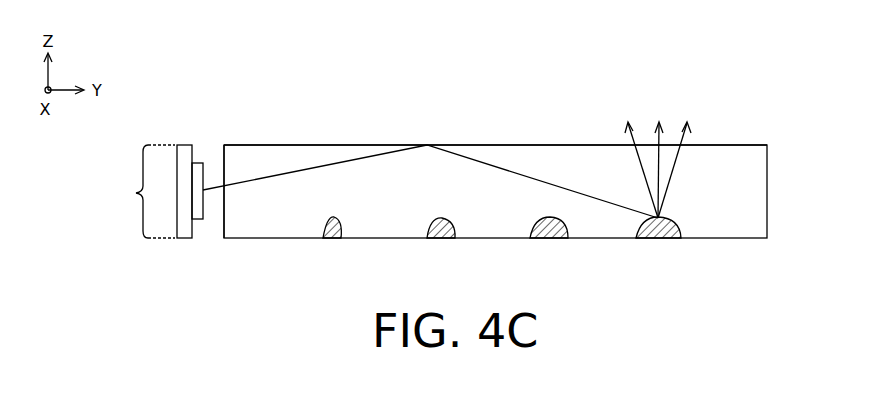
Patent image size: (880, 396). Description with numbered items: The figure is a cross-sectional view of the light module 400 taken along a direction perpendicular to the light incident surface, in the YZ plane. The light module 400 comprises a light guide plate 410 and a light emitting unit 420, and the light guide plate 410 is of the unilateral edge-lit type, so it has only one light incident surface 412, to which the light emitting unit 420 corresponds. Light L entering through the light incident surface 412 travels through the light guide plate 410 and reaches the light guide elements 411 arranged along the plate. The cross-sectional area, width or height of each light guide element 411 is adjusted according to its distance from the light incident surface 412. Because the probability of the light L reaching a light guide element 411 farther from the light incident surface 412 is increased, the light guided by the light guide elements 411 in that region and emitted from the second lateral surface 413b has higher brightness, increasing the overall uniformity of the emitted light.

The light module 400 is at (149, 168).
The light emitting unit 420 is at (186, 143).
The light guide plate 410 is at (483, 189).
The light guide elements 411 is at (441, 239).
The light incident surface 412 is at (223, 226).
The second lateral surface 413b is at (719, 145).
The light L is at (447, 159).